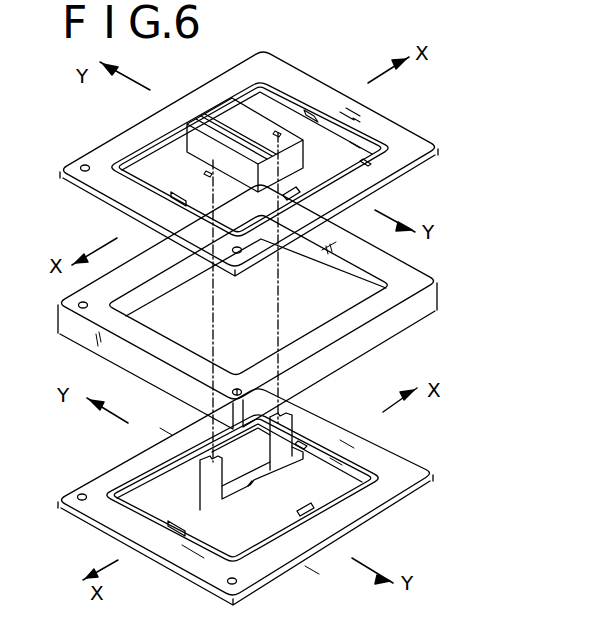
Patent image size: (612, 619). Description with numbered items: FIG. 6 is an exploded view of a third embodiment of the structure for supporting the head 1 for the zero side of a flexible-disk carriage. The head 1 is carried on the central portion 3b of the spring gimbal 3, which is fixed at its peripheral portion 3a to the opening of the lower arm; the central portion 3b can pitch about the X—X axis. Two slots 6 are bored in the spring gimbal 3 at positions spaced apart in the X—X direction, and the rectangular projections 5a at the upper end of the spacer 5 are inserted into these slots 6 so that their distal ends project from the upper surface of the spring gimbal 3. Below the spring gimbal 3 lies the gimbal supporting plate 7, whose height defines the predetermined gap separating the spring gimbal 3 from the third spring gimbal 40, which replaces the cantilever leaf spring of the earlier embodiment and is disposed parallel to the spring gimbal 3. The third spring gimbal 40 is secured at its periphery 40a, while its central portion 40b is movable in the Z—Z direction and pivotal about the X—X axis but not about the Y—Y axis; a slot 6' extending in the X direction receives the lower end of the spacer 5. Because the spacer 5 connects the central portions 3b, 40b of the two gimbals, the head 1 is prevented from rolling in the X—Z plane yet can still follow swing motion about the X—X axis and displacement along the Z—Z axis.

The head 1 is at (207, 128).
The spring gimbal 3 is at (267, 155).
The peripheral portion 3a is at (309, 87).
The central portion 3b is at (383, 188).
The slot 6 is at (201, 121).
The gimbal supporting plate 7 is at (440, 300).
The spacer 5 is at (203, 462).
The projection 5a is at (198, 458).
The third spring gimbal 40 is at (266, 502).
The periphery 40a is at (182, 560).
The central portion 40b is at (313, 498).
The slot 6' is at (292, 546).